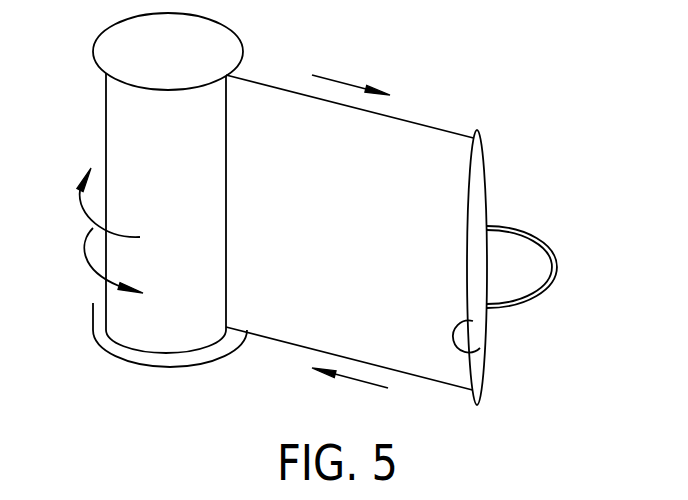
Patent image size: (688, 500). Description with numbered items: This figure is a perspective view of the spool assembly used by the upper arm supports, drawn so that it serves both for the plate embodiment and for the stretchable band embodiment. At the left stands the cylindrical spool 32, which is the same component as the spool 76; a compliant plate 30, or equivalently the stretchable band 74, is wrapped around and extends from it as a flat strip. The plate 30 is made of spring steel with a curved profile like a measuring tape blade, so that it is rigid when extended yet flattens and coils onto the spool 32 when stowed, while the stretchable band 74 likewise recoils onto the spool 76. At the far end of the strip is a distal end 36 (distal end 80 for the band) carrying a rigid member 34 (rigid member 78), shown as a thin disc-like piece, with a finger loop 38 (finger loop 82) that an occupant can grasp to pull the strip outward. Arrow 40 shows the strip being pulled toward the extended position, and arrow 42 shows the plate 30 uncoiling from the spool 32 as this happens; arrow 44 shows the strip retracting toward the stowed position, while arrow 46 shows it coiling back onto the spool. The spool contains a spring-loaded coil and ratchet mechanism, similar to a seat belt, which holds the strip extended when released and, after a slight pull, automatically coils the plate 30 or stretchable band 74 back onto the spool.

The plate 30 is at (350, 232).
The stretchable band 74 is at (364, 226).
The spool 32 is at (170, 190).
The spool 76 is at (198, 63).
The rigid member 34 is at (531, 267).
The rigid member 78 is at (477, 190).
The distal end 36 is at (509, 345).
The distal end 80 is at (481, 351).
The finger loop 38 is at (565, 274).
The finger loop 82 is at (540, 293).
The arrow 40 is at (344, 83).
The arrow 42 is at (82, 208).
The arrow 44 is at (355, 380).
The arrow 46 is at (86, 268).